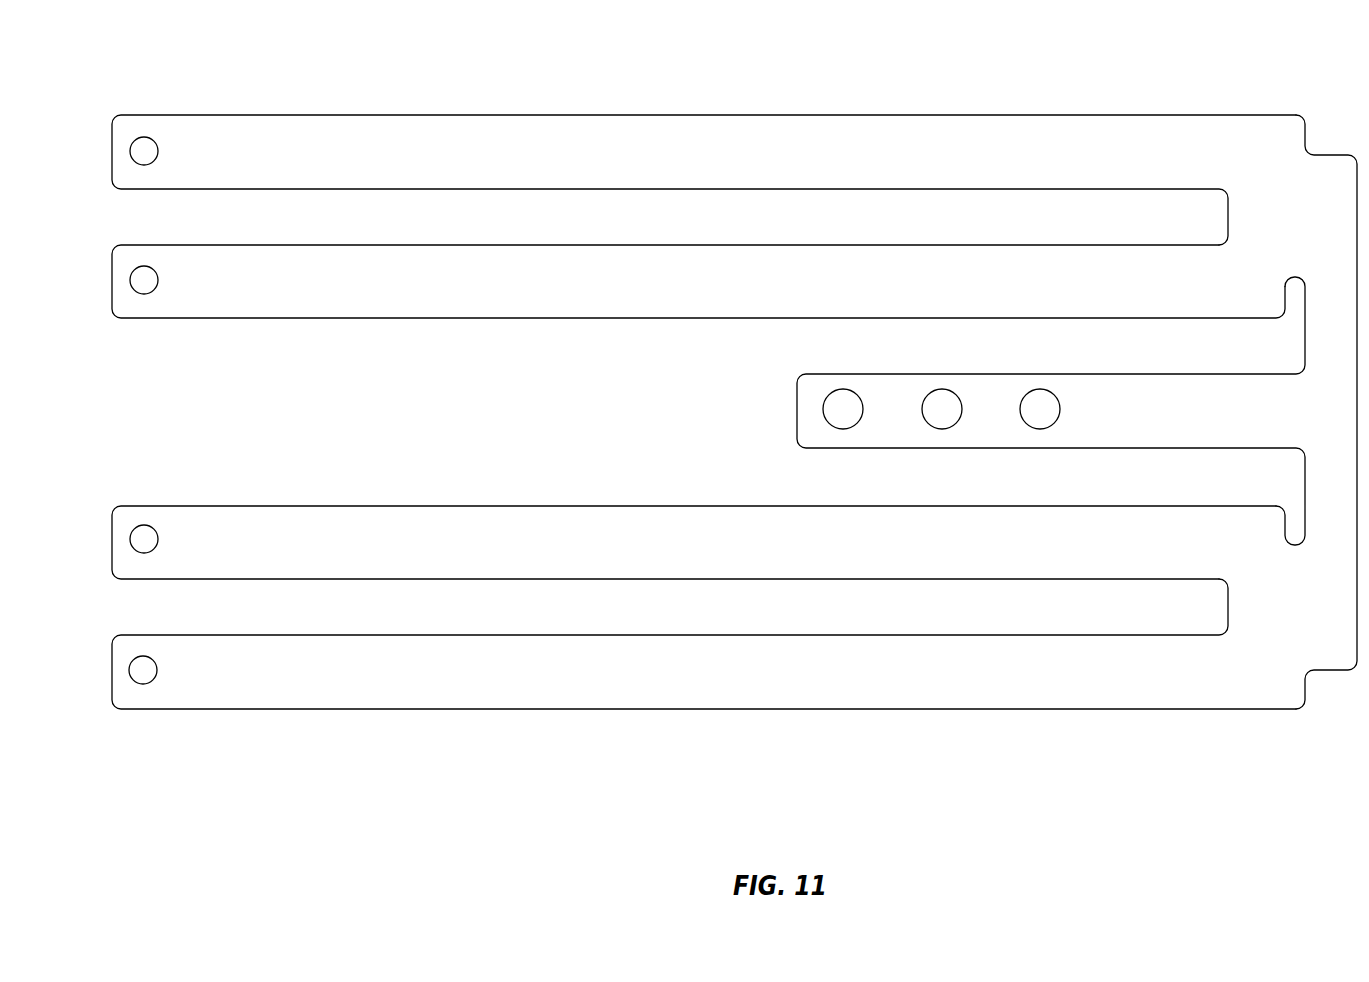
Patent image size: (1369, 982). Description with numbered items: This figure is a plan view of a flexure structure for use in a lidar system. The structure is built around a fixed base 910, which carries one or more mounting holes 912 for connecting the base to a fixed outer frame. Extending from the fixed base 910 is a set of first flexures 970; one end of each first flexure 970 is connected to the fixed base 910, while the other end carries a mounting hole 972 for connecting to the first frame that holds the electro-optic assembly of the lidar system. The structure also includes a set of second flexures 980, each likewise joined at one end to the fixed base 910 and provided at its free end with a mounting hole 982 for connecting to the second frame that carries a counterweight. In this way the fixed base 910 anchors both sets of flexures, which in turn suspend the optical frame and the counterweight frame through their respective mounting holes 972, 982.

The fixed base 910 is at (1115, 412).
The mounting holes 912 is at (832, 417).
The first flexures 970 is at (470, 275).
The mounting hole 972 is at (143, 292).
The second flexures 980 is at (544, 145).
The mounting hole 982 is at (144, 152).